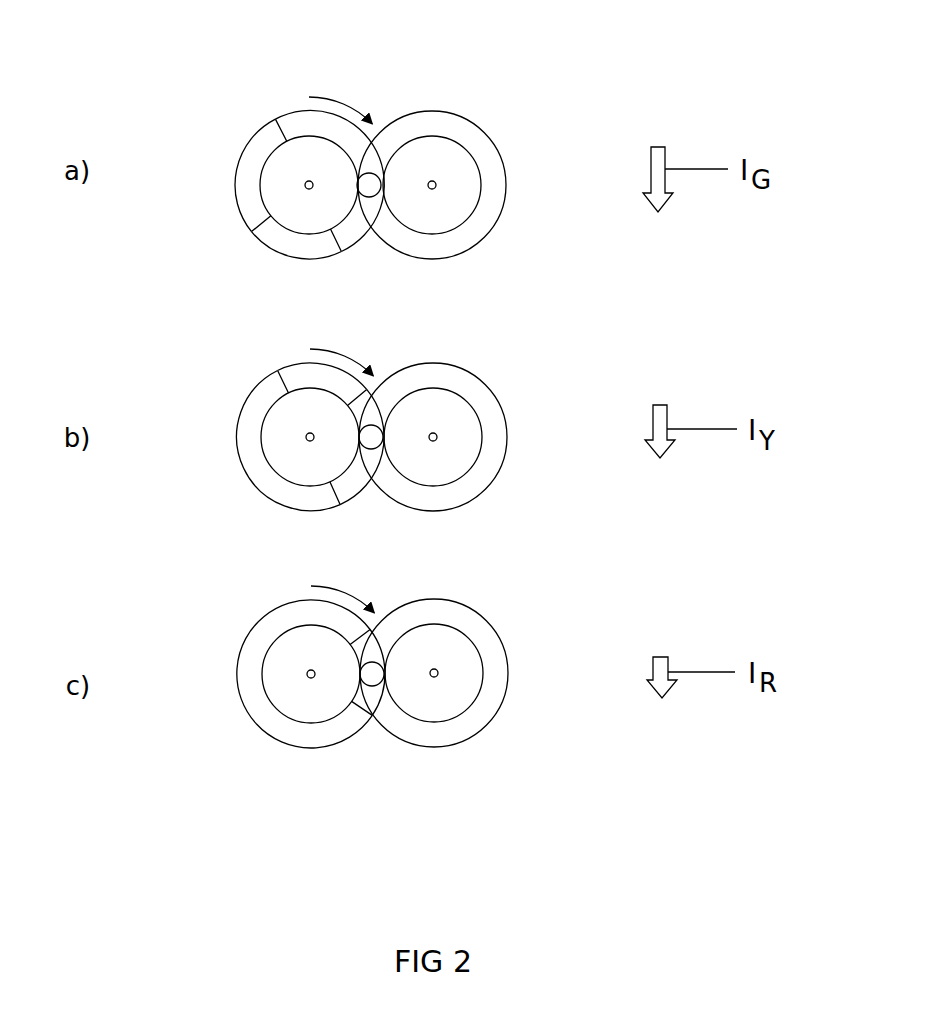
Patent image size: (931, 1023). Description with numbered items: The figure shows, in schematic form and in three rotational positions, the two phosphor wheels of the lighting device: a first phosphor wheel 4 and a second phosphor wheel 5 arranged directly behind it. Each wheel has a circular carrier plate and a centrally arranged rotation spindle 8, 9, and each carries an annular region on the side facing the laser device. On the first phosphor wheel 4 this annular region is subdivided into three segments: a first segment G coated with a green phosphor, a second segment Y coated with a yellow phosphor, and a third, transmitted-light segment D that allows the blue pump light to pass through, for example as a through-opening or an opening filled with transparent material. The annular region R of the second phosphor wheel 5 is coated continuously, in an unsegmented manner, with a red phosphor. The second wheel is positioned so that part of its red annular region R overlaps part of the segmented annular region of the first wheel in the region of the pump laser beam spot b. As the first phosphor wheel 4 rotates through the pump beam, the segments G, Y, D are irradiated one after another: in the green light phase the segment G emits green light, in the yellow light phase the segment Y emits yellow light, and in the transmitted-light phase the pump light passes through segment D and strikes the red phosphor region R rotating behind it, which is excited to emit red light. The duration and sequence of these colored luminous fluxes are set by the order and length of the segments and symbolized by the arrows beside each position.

The first phosphor wheel 4 is at (245, 138).
The second phosphor wheel 5 is at (510, 185).
The rotation spindle 8 is at (304, 184).
The rotation spindle 9 is at (437, 188).
The first segment G is at (300, 122).
The transmitted-light segment D is at (297, 242).
The second segment Y is at (250, 195).
The annular region R is at (448, 110).
The pump laser beam spot b is at (371, 185).